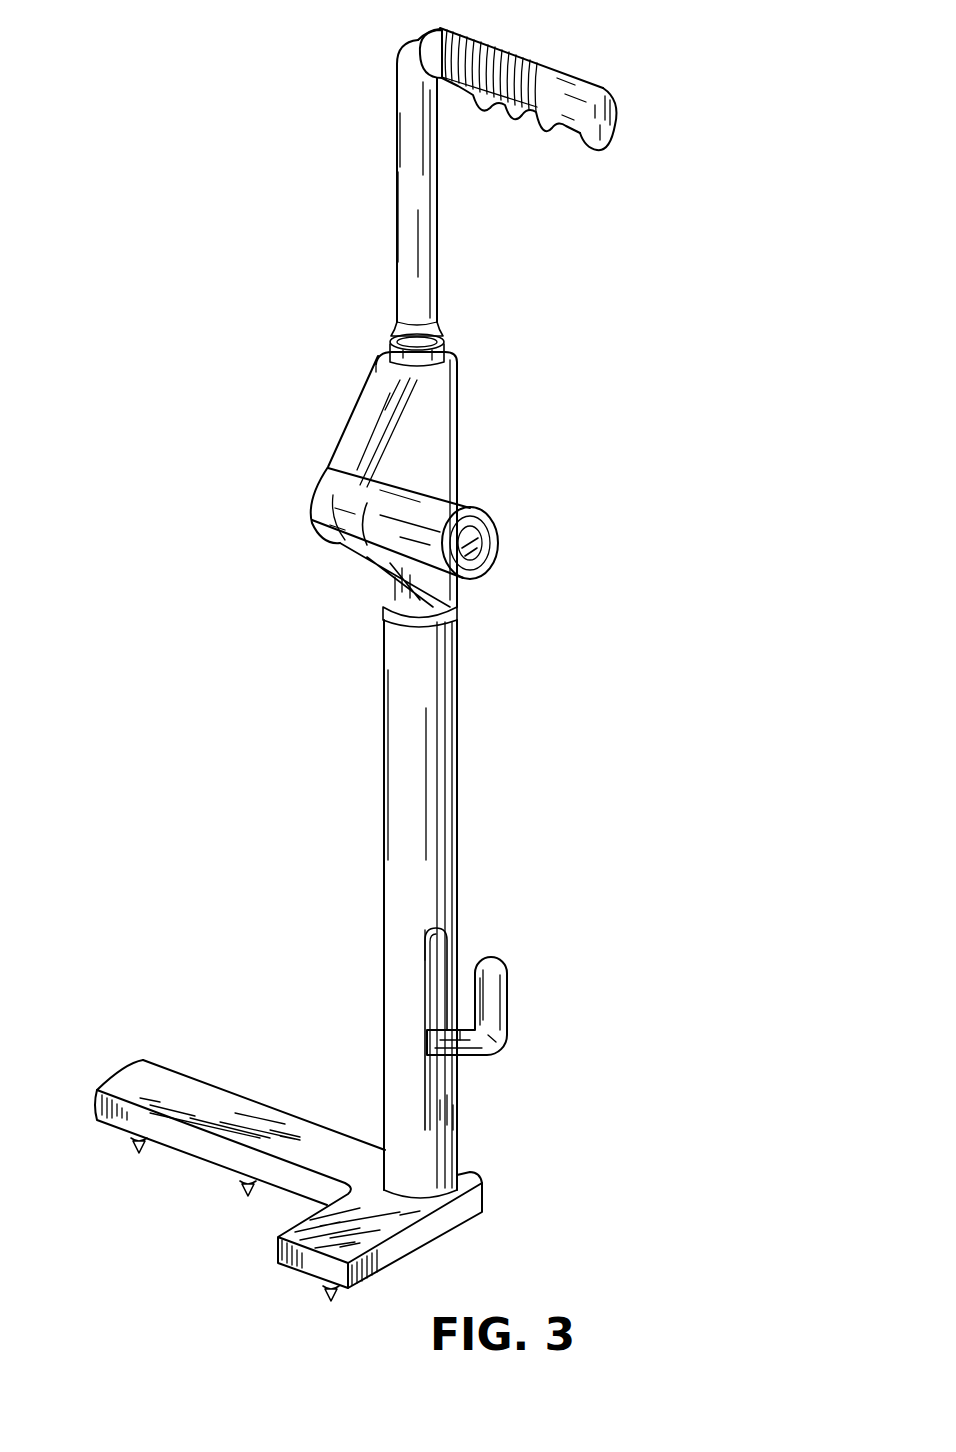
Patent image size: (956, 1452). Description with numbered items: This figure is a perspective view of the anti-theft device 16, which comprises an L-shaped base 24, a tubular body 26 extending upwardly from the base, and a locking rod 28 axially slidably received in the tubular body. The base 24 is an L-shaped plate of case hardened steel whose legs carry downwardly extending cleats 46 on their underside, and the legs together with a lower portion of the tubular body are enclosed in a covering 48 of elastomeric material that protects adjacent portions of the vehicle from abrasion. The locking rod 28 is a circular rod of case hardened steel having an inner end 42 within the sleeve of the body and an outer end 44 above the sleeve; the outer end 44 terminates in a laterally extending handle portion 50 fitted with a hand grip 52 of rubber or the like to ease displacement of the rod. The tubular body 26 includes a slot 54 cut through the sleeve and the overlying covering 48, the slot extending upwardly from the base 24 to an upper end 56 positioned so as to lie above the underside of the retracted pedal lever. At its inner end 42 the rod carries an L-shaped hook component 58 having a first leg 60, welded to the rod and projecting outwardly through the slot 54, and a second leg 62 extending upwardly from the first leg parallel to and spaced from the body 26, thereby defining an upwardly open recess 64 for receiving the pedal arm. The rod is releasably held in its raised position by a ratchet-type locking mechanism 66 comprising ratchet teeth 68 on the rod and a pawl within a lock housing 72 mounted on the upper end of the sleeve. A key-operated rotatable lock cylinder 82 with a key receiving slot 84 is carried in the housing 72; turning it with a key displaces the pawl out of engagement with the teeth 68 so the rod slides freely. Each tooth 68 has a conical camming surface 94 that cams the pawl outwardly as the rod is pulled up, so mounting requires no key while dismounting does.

The anti-theft device 16 is at (640, 614).
The L-shaped base 24 is at (332, 1120).
The tubular body 26 is at (385, 720).
The locking rod 28 is at (396, 184).
The inner end of locking rod 42 is at (430, 973).
The outer end of locking rod 44 is at (423, 221).
The cleats 46 is at (242, 1183).
The covering 48 is at (457, 772).
The handle portion 50 is at (421, 44).
The hand grip 52 is at (575, 85).
The slot 54 is at (445, 1125).
The upper end of slot 56 is at (445, 928).
The hook component 58 is at (508, 1022).
The first leg 60 is at (453, 1047).
The second leg 62 is at (492, 995).
The recess 64 is at (467, 993).
The ratchet-type locking mechanism 66 is at (326, 438).
The ratchet teeth 68 is at (440, 328).
The lock housing 72 is at (460, 421).
The lock cylinder 82 is at (480, 523).
The key receiving slot 84 is at (468, 552).
The conical camming surface 94 is at (404, 328).